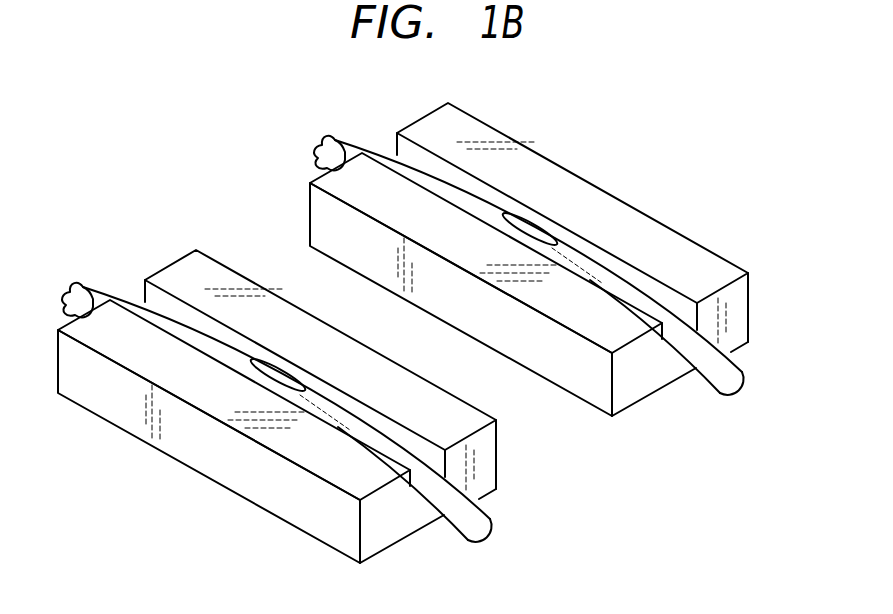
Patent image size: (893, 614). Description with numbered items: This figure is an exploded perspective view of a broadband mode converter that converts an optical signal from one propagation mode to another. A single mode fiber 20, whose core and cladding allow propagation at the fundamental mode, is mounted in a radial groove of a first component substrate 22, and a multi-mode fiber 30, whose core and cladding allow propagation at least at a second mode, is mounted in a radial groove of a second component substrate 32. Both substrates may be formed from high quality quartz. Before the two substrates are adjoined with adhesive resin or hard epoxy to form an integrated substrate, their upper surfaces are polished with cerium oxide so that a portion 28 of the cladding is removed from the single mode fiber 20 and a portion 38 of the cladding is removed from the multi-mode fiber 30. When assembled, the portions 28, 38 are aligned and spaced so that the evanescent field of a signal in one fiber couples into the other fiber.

The single mode fiber 20 is at (89, 293).
The first component substrate 22 is at (259, 485).
The portion of cladding removed from single mode fiber 28 is at (272, 372).
The multi-mode fiber 30 is at (341, 146).
The second component substrate 32 is at (737, 313).
The portion of cladding removed from multi-mode fiber 38 is at (536, 234).